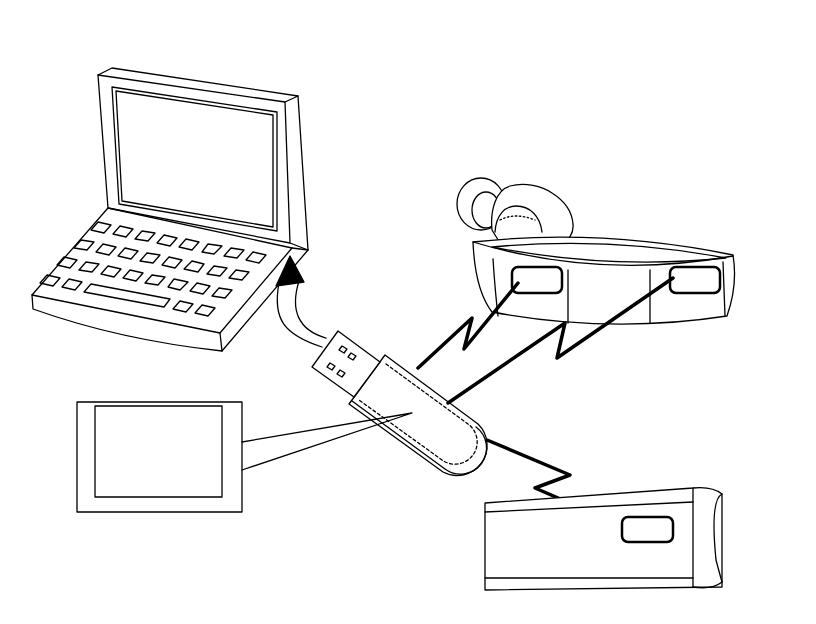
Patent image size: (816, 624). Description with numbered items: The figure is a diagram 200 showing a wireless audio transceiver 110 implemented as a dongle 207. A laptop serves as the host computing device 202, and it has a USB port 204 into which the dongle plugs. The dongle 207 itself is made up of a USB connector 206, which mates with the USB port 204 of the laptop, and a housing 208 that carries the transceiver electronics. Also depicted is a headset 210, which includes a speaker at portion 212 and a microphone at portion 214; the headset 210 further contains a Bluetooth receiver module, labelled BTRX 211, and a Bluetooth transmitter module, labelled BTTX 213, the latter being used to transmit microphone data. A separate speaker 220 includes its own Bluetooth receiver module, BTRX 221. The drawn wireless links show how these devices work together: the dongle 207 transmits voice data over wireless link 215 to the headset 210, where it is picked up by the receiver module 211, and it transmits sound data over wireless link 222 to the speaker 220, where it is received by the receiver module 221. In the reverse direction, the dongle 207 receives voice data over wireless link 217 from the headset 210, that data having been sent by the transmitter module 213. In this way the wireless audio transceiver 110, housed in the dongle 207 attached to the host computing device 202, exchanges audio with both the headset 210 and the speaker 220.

The diagram 200 is at (58, 55).
The host computing device 202 is at (294, 99).
The USB port 204 is at (306, 278).
The USB connector 206 is at (366, 343).
The dongle 207 is at (406, 452).
The housing 208 is at (402, 360).
The wireless audio transceiver 110 is at (172, 499).
The headset 210 is at (733, 253).
The Bluetooth receiver module 211 is at (533, 296).
The speaker portion 212 is at (510, 177).
The Bluetooth transmitter module 213 is at (690, 296).
The microphone portion 214 is at (660, 225).
The wireless link 215 is at (466, 309).
The wireless link 217 is at (568, 357).
The speaker 220 is at (695, 489).
The Bluetooth receiver module 221 is at (644, 544).
The wireless link 222 is at (562, 467).